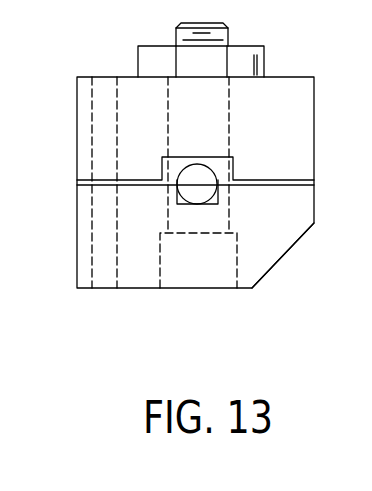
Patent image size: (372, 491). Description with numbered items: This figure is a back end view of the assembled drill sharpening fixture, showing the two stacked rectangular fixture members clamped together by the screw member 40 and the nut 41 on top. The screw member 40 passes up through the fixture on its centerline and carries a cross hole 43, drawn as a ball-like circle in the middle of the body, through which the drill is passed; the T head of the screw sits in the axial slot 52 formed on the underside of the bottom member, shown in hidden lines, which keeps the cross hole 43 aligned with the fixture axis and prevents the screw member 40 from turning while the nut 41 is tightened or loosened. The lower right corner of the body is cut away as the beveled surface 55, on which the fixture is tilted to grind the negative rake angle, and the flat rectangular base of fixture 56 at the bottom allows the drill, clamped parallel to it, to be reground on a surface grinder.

The screw member 40 is at (175, 41).
The nut 41 is at (138, 67).
The cross hole 43 is at (208, 178).
The axial slot 52 is at (218, 278).
The beveled surface 55 is at (282, 258).
The base of fixture 56 is at (145, 288).